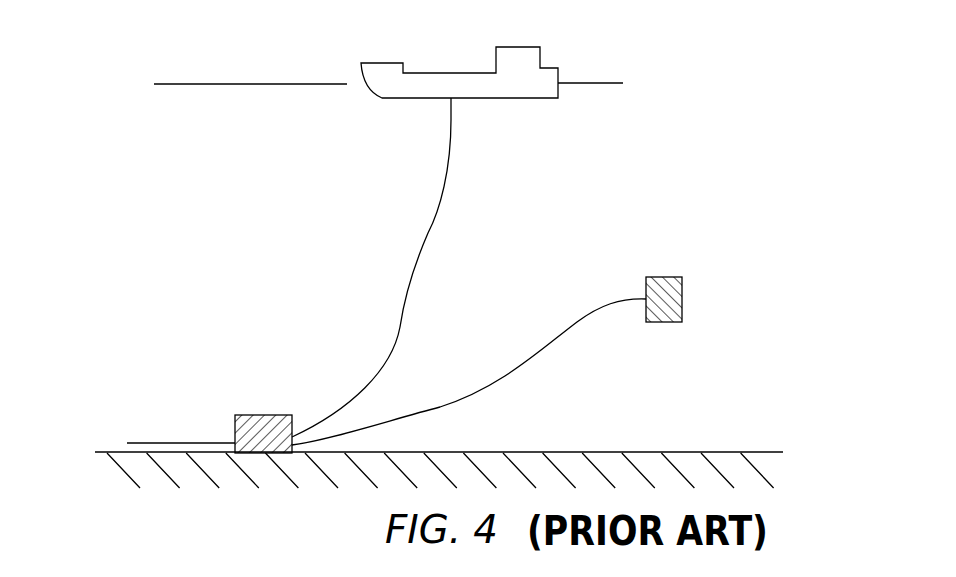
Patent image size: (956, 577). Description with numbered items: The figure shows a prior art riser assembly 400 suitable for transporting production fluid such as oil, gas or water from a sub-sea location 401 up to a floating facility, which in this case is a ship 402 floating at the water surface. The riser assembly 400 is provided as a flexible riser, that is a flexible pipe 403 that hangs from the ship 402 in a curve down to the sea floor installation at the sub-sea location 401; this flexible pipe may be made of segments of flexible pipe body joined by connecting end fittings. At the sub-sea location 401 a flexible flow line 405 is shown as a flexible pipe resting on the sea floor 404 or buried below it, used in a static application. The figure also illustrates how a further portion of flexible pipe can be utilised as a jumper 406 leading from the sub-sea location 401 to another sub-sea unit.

The riser assembly 400 is at (626, 166).
The sub-sea location 401 is at (262, 414).
The ship 402 is at (383, 62).
The flexible pipe 403 is at (412, 291).
The sea floor 404 is at (741, 451).
The flexible flow line 405 is at (168, 442).
The jumper 406 is at (578, 322).